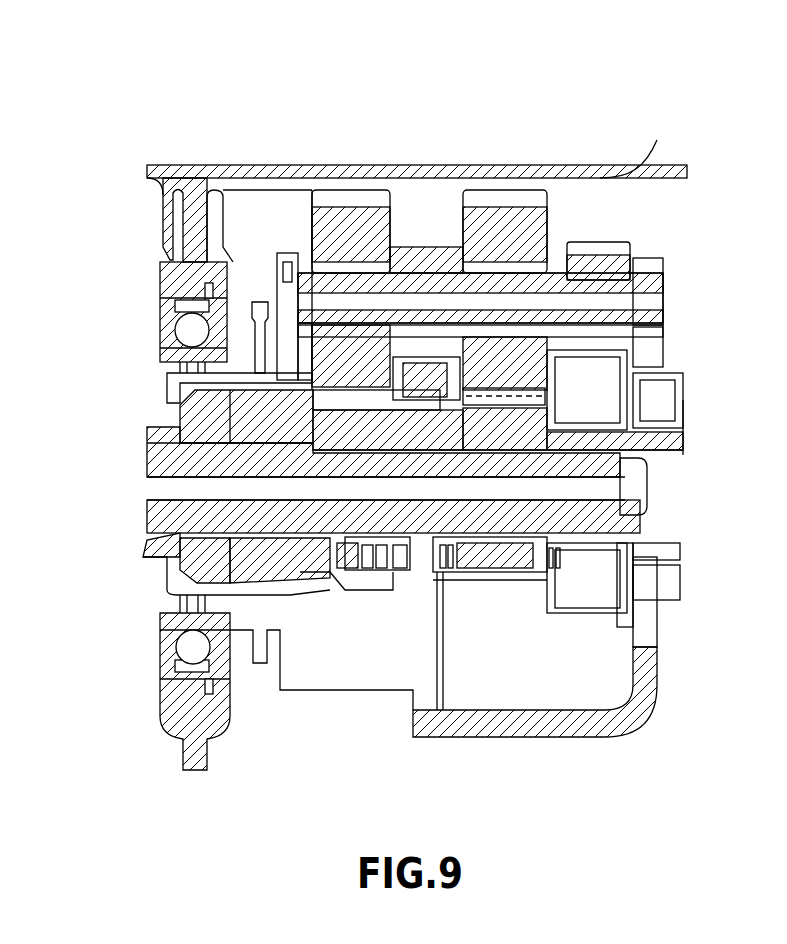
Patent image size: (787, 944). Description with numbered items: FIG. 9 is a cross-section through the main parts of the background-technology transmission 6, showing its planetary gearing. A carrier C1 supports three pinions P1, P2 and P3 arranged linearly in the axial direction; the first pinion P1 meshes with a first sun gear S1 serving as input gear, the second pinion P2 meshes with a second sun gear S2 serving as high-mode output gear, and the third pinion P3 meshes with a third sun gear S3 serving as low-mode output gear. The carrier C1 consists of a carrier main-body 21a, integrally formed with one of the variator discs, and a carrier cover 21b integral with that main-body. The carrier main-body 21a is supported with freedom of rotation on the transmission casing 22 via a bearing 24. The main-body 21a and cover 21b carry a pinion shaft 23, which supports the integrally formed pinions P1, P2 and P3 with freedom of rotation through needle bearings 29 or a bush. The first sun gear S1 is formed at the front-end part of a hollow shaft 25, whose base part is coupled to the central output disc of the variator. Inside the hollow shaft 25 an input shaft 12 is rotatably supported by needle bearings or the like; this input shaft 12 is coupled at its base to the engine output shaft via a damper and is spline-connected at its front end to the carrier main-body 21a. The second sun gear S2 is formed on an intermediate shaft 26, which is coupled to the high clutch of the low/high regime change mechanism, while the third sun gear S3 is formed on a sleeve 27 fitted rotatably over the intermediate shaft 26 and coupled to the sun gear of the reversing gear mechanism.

The automatic transmission 6 is at (620, 128).
The input shaft 12 is at (192, 461).
The carrier main-body 21a is at (272, 355).
The carrier cover 21b is at (597, 722).
The transmission casing 22 is at (197, 187).
The pinion shaft 23 is at (450, 283).
The bearing 24 is at (190, 330).
The hollow shaft 25 is at (212, 413).
The intermediate shaft 26 is at (660, 438).
The sleeve 27 is at (655, 555).
The needle bearings 29 is at (347, 278).
The first pinion P1 is at (360, 220).
The second pinion P2 is at (515, 205).
The third pinion P3 is at (622, 250).
The carrier C1 is at (690, 262).
The first sun gear S1 is at (312, 576).
The second sun gear S2 is at (523, 580).
The third sun gear S3 is at (600, 615).